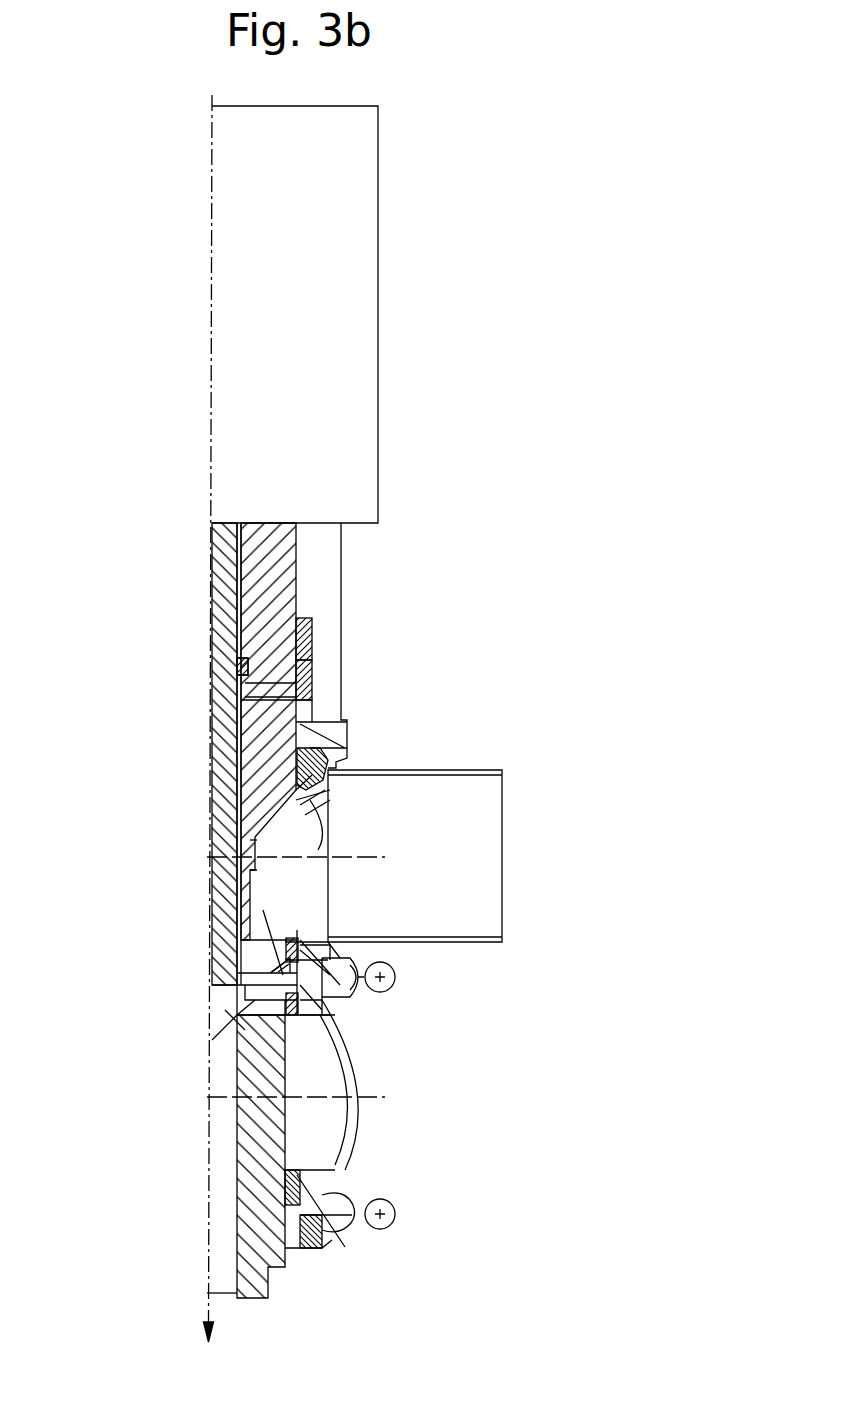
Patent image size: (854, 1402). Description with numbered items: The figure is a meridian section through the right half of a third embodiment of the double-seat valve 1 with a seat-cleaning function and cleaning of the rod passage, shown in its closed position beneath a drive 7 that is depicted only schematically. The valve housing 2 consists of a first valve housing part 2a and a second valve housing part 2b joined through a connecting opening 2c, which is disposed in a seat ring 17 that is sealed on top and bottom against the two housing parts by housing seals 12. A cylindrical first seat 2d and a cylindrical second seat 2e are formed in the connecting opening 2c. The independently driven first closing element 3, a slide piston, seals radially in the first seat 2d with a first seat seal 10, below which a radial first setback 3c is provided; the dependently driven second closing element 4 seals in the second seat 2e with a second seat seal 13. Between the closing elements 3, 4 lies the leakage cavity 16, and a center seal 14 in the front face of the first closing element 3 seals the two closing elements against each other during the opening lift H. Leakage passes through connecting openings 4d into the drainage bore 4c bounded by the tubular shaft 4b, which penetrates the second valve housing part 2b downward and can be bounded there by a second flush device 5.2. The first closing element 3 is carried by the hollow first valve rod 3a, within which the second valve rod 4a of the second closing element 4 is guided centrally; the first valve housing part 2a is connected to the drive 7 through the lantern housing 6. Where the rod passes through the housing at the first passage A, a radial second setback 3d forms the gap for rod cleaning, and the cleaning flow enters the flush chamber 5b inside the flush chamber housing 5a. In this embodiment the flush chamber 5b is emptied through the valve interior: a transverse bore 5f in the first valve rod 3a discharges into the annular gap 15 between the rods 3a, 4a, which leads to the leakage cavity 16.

The drive 7 is at (405, 348).
The lantern housing 6 is at (345, 600).
The flush chamber housing 5a is at (309, 648).
The flush chamber 5b is at (300, 675).
The transverse bore 5f is at (240, 668).
The annular gap 15 is at (237, 727).
The first valve housing part 2a is at (300, 793).
The radial second setback 3d is at (303, 812).
The first passage A is at (318, 815).
The second valve rod 4a is at (248, 848).
The first valve rod 3a is at (250, 876).
The double-seat valve 1 is at (178, 903).
The valve housing 2 is at (187, 947).
The first closing element 3 is at (292, 940).
The first seat seal 10 is at (296, 955).
The housing seal 12 is at (300, 958).
The seat ring 17 is at (306, 960).
The radial first setback 3c is at (312, 963).
The first seat 2d is at (335, 970).
The pivot point g is at (345, 982).
The second seat 2e is at (326, 1002).
The connecting opening 2c is at (283, 987).
The leakage cavity 16 is at (243, 988).
The second closing element 4 is at (280, 1010).
The connecting openings 4d is at (240, 1012).
The center seal 14 is at (269, 929).
The second seat seal 13 is at (300, 1020).
The second valve housing part 2b is at (352, 1106).
The tubular shaft 4b is at (275, 1135).
The drainage bore 4c is at (212, 1180).
The second flush device 5.2 is at (366, 1214).
The opening lift H is at (173, 720).